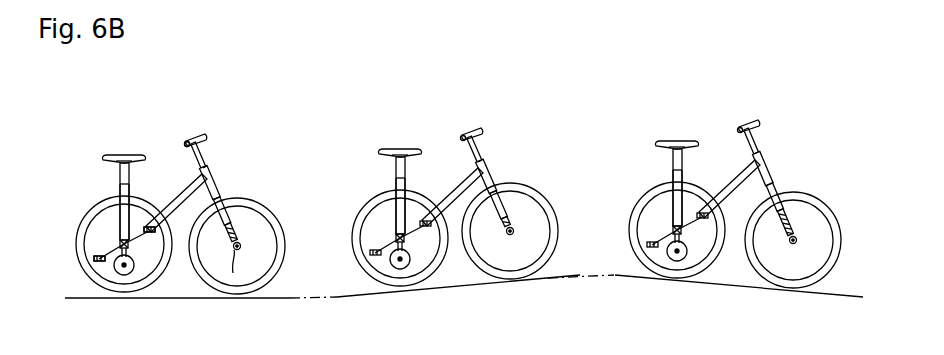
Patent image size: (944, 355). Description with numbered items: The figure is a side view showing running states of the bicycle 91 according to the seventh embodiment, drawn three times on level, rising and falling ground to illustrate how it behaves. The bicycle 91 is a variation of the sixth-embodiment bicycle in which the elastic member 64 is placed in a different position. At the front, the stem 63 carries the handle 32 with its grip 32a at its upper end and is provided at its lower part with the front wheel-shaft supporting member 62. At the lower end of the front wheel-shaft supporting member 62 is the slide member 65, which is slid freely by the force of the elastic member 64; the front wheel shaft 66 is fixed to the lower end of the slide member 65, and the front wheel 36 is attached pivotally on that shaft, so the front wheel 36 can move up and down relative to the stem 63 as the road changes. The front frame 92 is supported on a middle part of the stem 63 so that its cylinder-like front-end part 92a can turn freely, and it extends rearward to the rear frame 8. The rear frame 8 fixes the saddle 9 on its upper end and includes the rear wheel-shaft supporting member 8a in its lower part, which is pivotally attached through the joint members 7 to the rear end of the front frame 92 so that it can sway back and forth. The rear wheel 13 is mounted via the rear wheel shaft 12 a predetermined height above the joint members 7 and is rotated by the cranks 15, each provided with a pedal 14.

The joint member 7 is at (113, 284).
The rear frame 8 is at (118, 186).
The rear wheel-shaft supporting member 8a is at (118, 210).
The saddle 9 is at (122, 156).
The rear wheel shaft 12 is at (117, 243).
The rear wheel 13 is at (78, 283).
The pedal 14 is at (98, 257).
The crank 15 is at (95, 259).
The handle 32 is at (205, 136).
The grip 32a is at (193, 139).
The front wheel 36 is at (281, 275).
The front wheel-shaft supporting member 62 is at (225, 203).
The stem 63 is at (204, 160).
The elastic member 64 is at (235, 223).
The slide member 65 is at (233, 273).
The front wheel shaft 66 is at (231, 247).
The bicycle 91 is at (184, 118).
The front frame 92 is at (178, 197).
The front-end part 92a is at (213, 187).